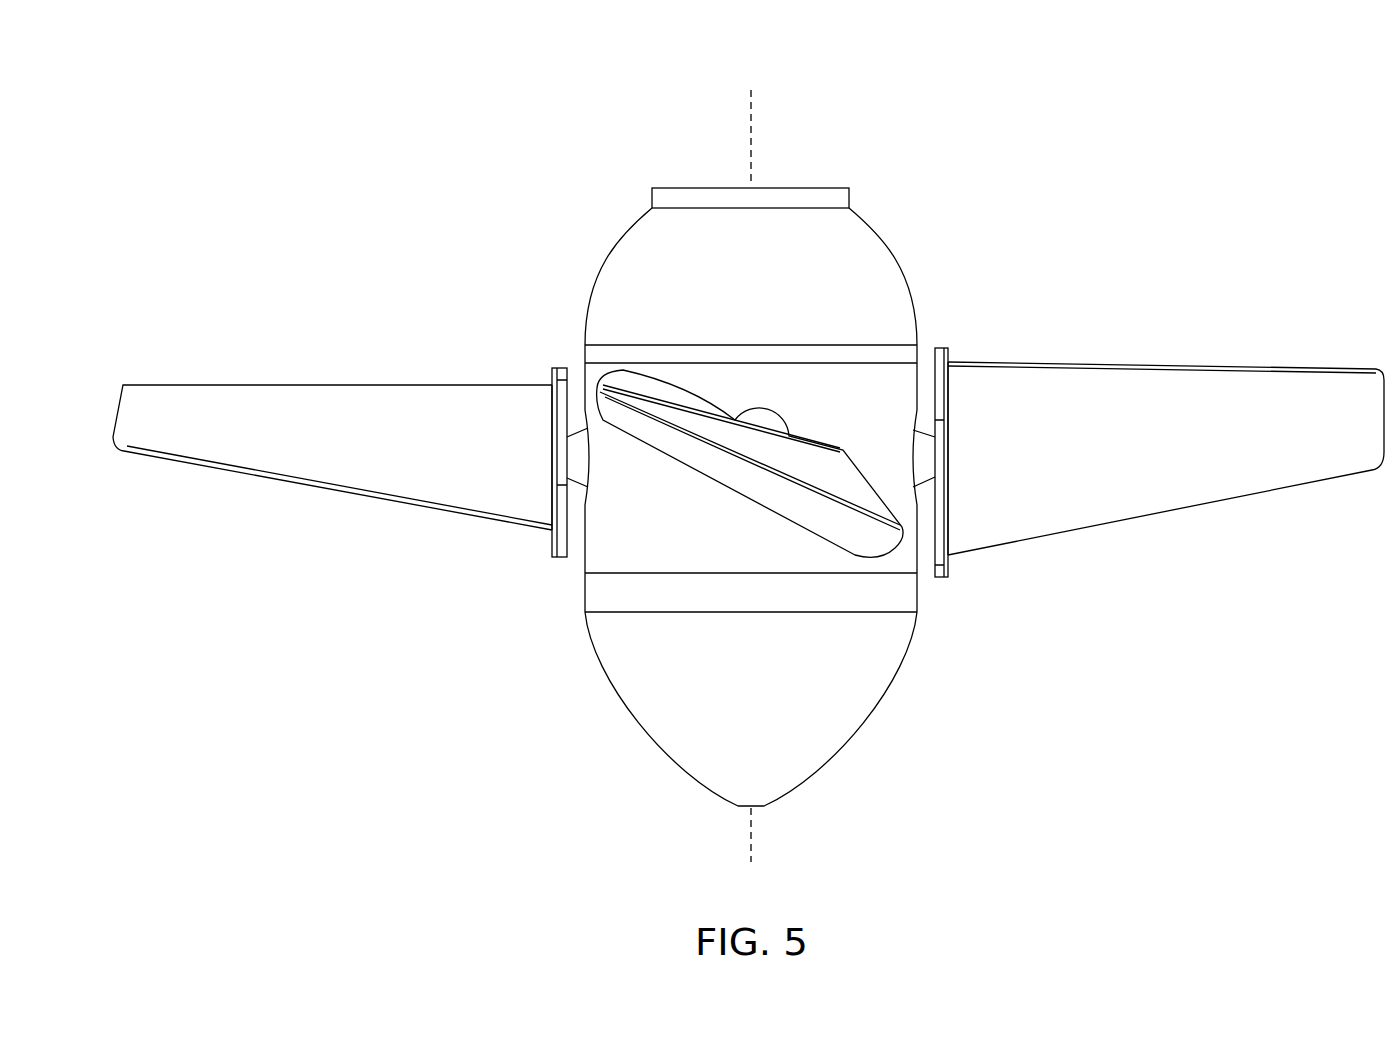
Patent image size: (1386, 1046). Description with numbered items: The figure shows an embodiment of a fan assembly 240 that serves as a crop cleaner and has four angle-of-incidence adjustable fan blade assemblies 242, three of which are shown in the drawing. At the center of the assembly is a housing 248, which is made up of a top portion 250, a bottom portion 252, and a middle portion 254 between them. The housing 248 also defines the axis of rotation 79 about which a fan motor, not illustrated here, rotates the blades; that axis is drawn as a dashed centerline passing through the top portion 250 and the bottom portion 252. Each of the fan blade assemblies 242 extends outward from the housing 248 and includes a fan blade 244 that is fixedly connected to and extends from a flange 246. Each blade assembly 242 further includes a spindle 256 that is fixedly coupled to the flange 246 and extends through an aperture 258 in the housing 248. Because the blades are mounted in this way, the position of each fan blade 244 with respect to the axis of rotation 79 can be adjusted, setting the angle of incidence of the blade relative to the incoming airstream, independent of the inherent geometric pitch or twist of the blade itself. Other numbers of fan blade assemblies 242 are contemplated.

The axis of rotation 79 is at (762, 130).
The fan assembly 240 is at (1128, 100).
The fan blade assembly 242 is at (296, 518).
The fan blade 244 is at (318, 405).
The flange 246 is at (637, 378).
The housing 248 is at (887, 215).
The top portion 250 is at (641, 243).
The bottom portion 252 is at (880, 668).
The middle portion 254 is at (603, 548).
The spindle 256 is at (578, 428).
The aperture 258 is at (576, 492).